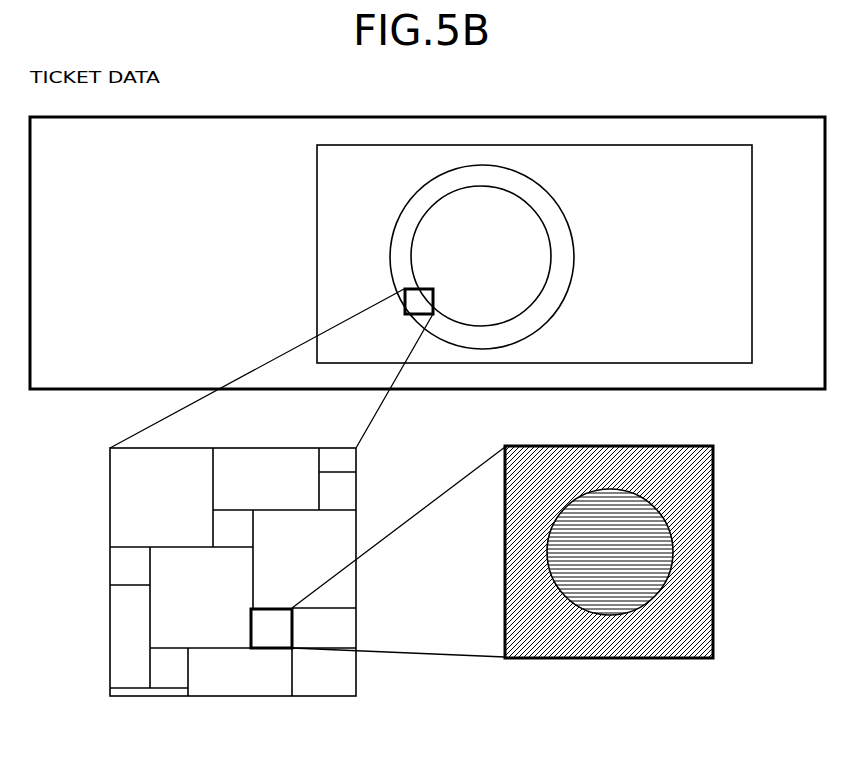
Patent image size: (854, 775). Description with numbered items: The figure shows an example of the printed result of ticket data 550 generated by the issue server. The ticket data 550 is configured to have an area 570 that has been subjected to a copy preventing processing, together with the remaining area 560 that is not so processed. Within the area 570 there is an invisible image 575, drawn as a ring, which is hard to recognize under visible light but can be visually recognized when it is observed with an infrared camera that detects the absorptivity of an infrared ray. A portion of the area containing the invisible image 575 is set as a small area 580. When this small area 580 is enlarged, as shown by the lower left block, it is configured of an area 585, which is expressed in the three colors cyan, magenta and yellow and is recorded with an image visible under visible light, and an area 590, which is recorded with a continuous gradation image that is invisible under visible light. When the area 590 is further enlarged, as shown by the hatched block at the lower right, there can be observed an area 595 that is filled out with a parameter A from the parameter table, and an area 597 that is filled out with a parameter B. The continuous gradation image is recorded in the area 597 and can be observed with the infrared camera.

The ticket data 550 is at (558, 113).
The remaining area 560 is at (181, 212).
The area subjected to copy preventing processing 570 is at (633, 285).
The invisible image 575 is at (547, 205).
The small area 580 is at (416, 300).
The area expressed in cyan, magenta and yellow 585 is at (115, 510).
The area recorded with continuous gradation image 590 is at (350, 493).
The area filled out with parameter A 595 is at (698, 490).
The area filled out with parameter B 597 is at (653, 553).